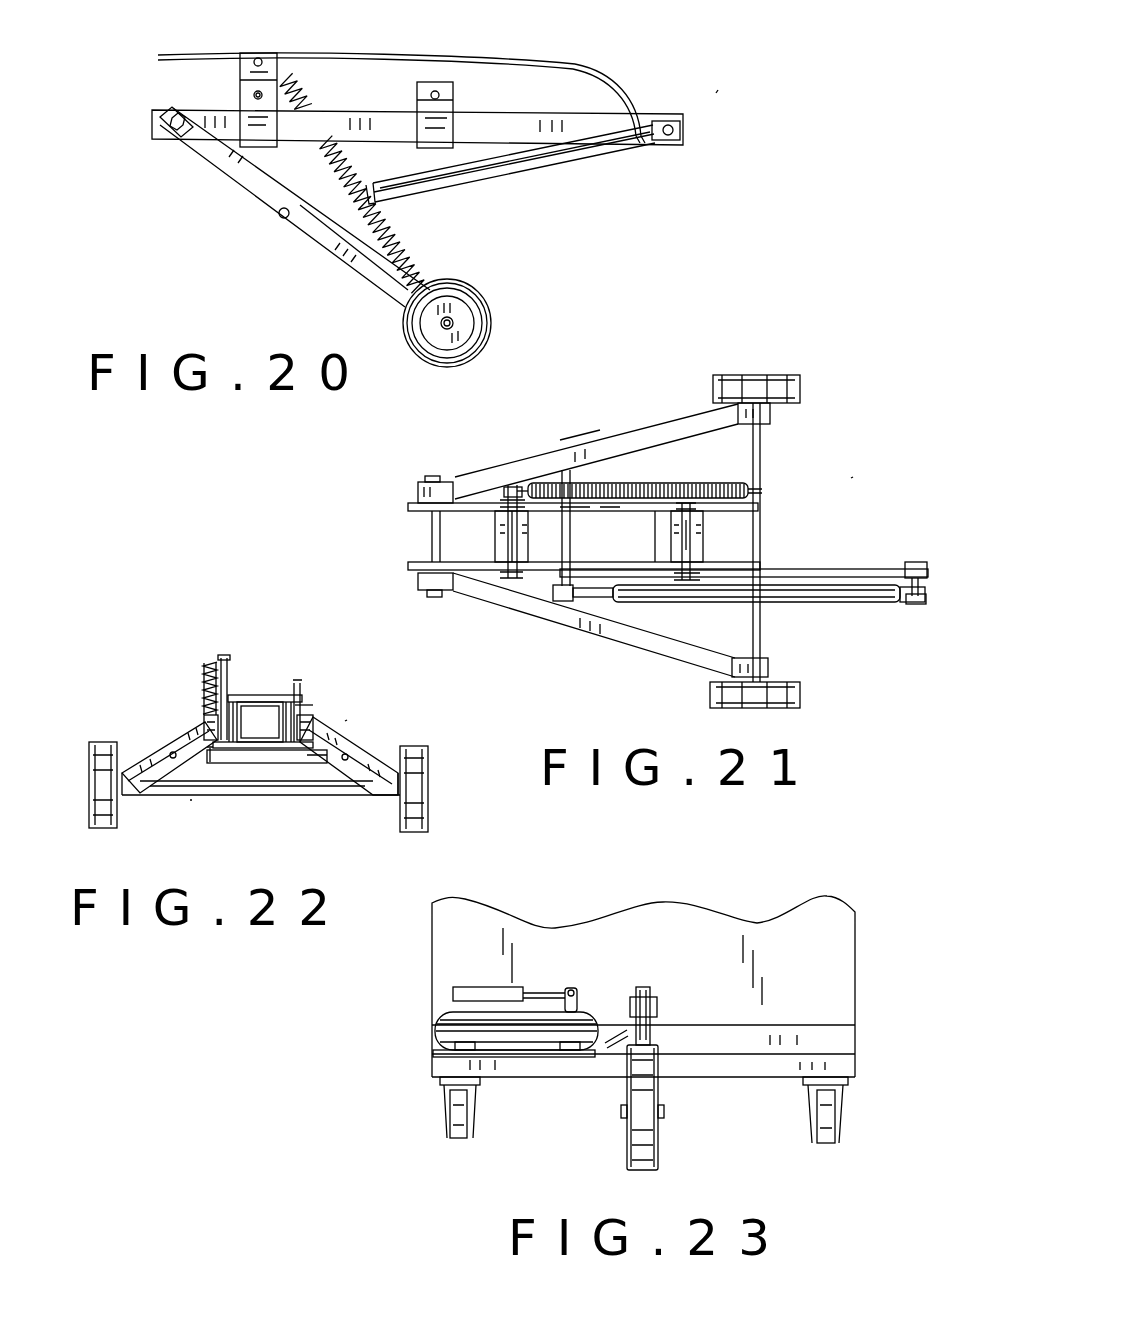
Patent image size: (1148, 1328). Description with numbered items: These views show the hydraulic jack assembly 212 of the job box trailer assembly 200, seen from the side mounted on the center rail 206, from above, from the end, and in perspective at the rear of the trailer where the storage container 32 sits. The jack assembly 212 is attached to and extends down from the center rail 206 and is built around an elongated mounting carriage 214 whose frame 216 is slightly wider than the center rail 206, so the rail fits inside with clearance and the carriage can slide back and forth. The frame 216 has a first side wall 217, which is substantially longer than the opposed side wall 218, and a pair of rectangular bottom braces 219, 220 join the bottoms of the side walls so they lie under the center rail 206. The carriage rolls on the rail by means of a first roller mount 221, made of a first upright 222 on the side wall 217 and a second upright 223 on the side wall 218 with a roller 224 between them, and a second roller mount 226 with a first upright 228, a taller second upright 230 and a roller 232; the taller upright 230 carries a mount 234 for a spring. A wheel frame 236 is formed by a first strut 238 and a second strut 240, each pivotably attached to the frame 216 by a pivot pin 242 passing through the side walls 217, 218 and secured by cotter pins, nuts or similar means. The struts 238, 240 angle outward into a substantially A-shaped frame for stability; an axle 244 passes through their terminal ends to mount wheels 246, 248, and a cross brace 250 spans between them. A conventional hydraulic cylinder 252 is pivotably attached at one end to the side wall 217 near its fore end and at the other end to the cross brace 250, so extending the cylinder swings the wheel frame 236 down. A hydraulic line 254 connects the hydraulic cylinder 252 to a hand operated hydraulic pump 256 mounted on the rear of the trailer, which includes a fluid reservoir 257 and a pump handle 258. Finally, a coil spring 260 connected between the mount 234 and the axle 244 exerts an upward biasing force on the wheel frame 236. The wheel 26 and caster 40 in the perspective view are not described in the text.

In FIG. 20, the hydraulic jack assembly 212 is at (718, 90).
In FIG. 21, the hydraulic jack assembly 212 is at (853, 477).
In FIG. 22, the hydraulic jack assembly 212 is at (347, 720).
In FIG. 20, the mounting carriage 214 is at (598, 58).
In FIG. 20, the frame 216 is at (472, 100).
In FIG. 21, the frame 216 is at (465, 540).
In FIG. 20, the first side wall 217 is at (498, 132).
In FIG. 21, the first side wall 217 is at (845, 570).
In FIG. 22, the first side wall 217 is at (302, 717).
In FIG. 21, the opposed side wall 218 is at (655, 512).
In FIG. 21, the bottom brace 219 is at (500, 543).
In FIG. 21, the bottom brace 220 is at (693, 538).
In FIG. 20, the first roller mount 221 is at (435, 78).
In FIG. 20, the first upright 222 is at (425, 110).
In FIG. 21, the first upright 222 is at (730, 560).
In FIG. 21, the second upright 223 is at (723, 484).
In FIG. 21, the roller 224 is at (677, 543).
In FIG. 20, the second roller mount 226 is at (230, 100).
In FIG. 20, the first upright 228 is at (258, 128).
In FIG. 21, the first upright 228 is at (513, 549).
In FIG. 22, the first upright 228 is at (300, 690).
In FIG. 20, the second upright 230 is at (282, 70).
In FIG. 21, the second upright 230 is at (510, 500).
In FIG. 22, the second upright 230 is at (203, 683).
In FIG. 21, the roller 232 is at (415, 511).
In FIG. 22, the roller 232 is at (262, 695).
In FIG. 20, the mount 234 is at (259, 58).
In FIG. 21, the mount 234 is at (511, 486).
In FIG. 22, the mount 234 is at (223, 657).
In FIG. 20, the wheel frame 236 is at (257, 200).
In FIG. 22, the wheel frame 236 is at (190, 800).
In FIG. 20, the first strut 238 is at (328, 233).
In FIG. 21, the first strut 238 is at (634, 637).
In FIG. 22, the first strut 238 is at (373, 750).
In FIG. 21, the second strut 240 is at (623, 433).
In FIG. 22, the second strut 240 is at (180, 732).
In FIG. 20, the pivot pin 242 is at (172, 135).
In FIG. 20, the axle 244 is at (450, 340).
In FIG. 21, the axle 244 is at (761, 635).
In FIG. 22, the axle 244 is at (303, 790).
In FIG. 20, the wheel 246 is at (492, 328).
In FIG. 21, the wheel 246 is at (787, 698).
In FIG. 22, the wheel 246 is at (421, 806).
In FIG. 21, the wheel 248 is at (790, 390).
In FIG. 22, the wheel 248 is at (98, 781).
In FIG. 21, the cross brace 250 is at (600, 472).
In FIG. 22, the cross brace 250 is at (253, 757).
In FIG. 20, the hydraulic cylinder 252 is at (600, 146).
In FIG. 21, the hydraulic cylinder 252 is at (853, 598).
In FIG. 20, the hydraulic line 254 is at (565, 114).
In FIG. 23, the hydraulic pump 256 is at (445, 1030).
In FIG. 23, the fluid reservoir 257 is at (455, 1027).
In FIG. 23, the pump handle 258 is at (490, 996).
In FIG. 20, the coil spring 260 is at (420, 256).
In FIG. 22, the center rail 206 is at (300, 705).
In FIG. 23, the storage container 32 is at (838, 935).
In FIG. 23, the job box trailer assembly 200 is at (858, 1057).
In FIG. 23, the wheel 26 is at (661, 1127).
In FIG. 23, the caster 40 is at (460, 1128).